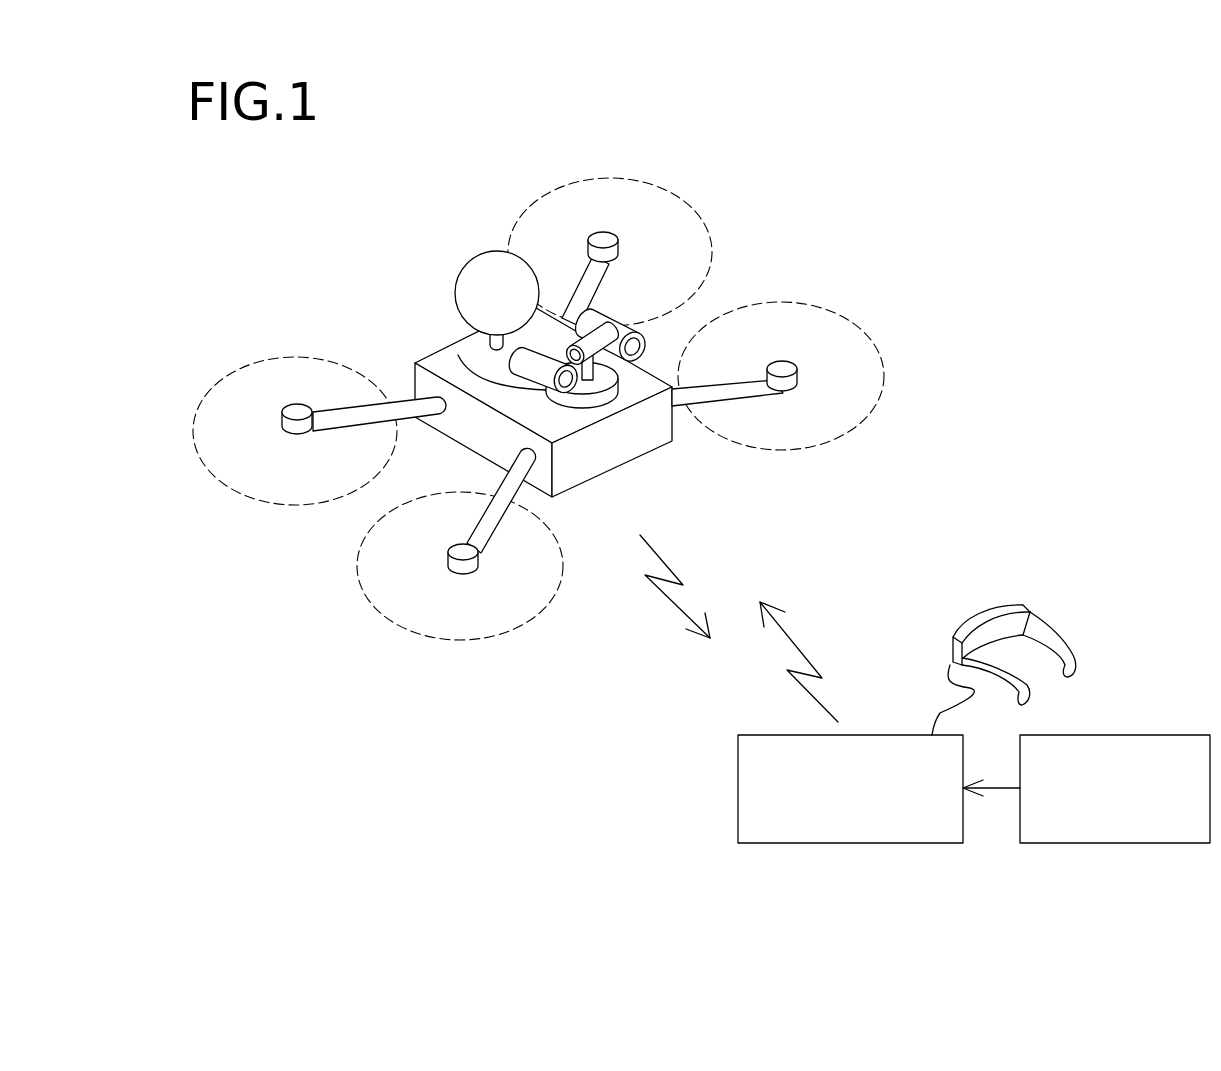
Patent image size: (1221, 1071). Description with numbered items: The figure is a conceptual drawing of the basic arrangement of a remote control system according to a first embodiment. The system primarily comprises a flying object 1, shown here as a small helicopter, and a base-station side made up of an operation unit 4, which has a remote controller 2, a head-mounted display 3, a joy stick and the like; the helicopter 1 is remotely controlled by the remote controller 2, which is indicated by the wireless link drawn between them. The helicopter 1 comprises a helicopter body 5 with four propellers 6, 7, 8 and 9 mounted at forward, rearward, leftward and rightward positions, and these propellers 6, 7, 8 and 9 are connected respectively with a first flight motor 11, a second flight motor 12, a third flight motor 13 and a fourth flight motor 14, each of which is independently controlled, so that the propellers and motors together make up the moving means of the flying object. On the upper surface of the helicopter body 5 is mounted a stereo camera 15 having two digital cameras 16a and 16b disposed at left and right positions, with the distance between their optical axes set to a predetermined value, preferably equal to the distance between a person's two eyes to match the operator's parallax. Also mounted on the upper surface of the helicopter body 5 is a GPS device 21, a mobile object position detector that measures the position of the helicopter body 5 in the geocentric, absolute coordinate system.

The flying object 1 is at (585, 410).
The remote controller 2 is at (738, 773).
The head-mounted display 3 is at (1025, 605).
The operation unit 4 is at (1120, 735).
The helicopter body 5 is at (613, 470).
The propeller 6 is at (425, 628).
The propeller 7 is at (268, 497).
The propeller 8 is at (665, 195).
The propeller 9 is at (870, 345).
The first flight motor 11 is at (443, 567).
The second flight motor 12 is at (298, 403).
The third flight motor 13 is at (597, 232).
The fourth flight motor 14 is at (788, 362).
The stereo camera 15 is at (618, 313).
The digital camera 16a is at (518, 357).
The digital camera 16b is at (650, 341).
The GPS device 21 is at (468, 258).